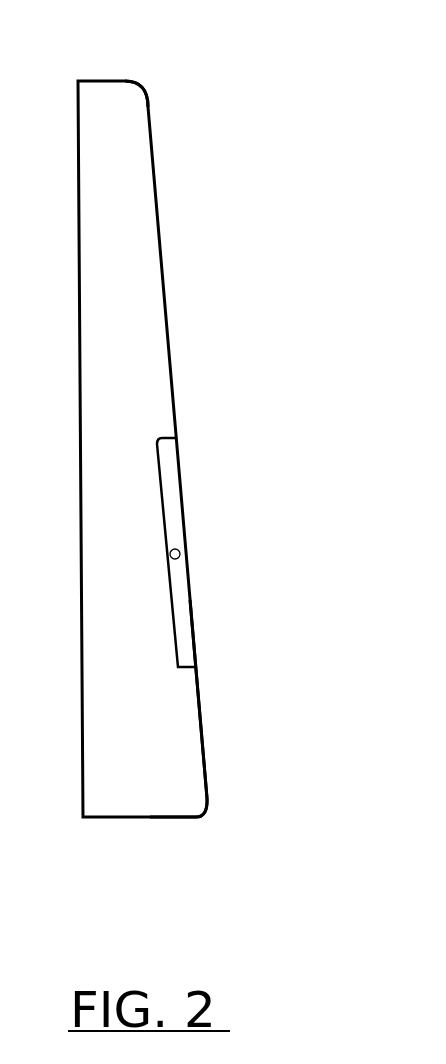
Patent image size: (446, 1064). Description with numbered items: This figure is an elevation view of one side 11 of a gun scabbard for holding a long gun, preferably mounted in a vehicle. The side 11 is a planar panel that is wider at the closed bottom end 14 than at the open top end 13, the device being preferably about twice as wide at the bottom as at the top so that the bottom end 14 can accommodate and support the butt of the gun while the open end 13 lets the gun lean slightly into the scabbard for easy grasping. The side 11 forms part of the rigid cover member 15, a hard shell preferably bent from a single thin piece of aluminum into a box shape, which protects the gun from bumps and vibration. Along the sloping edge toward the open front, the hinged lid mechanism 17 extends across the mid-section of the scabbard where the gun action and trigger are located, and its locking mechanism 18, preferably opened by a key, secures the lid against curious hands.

The planar side 11 is at (125, 293).
The open top end 13 is at (118, 80).
The closed bottom end 14 is at (160, 818).
The rigid cover member 15 is at (203, 728).
The hinged lid mechanism 17 is at (187, 515).
The locking mechanism 18 is at (187, 562).